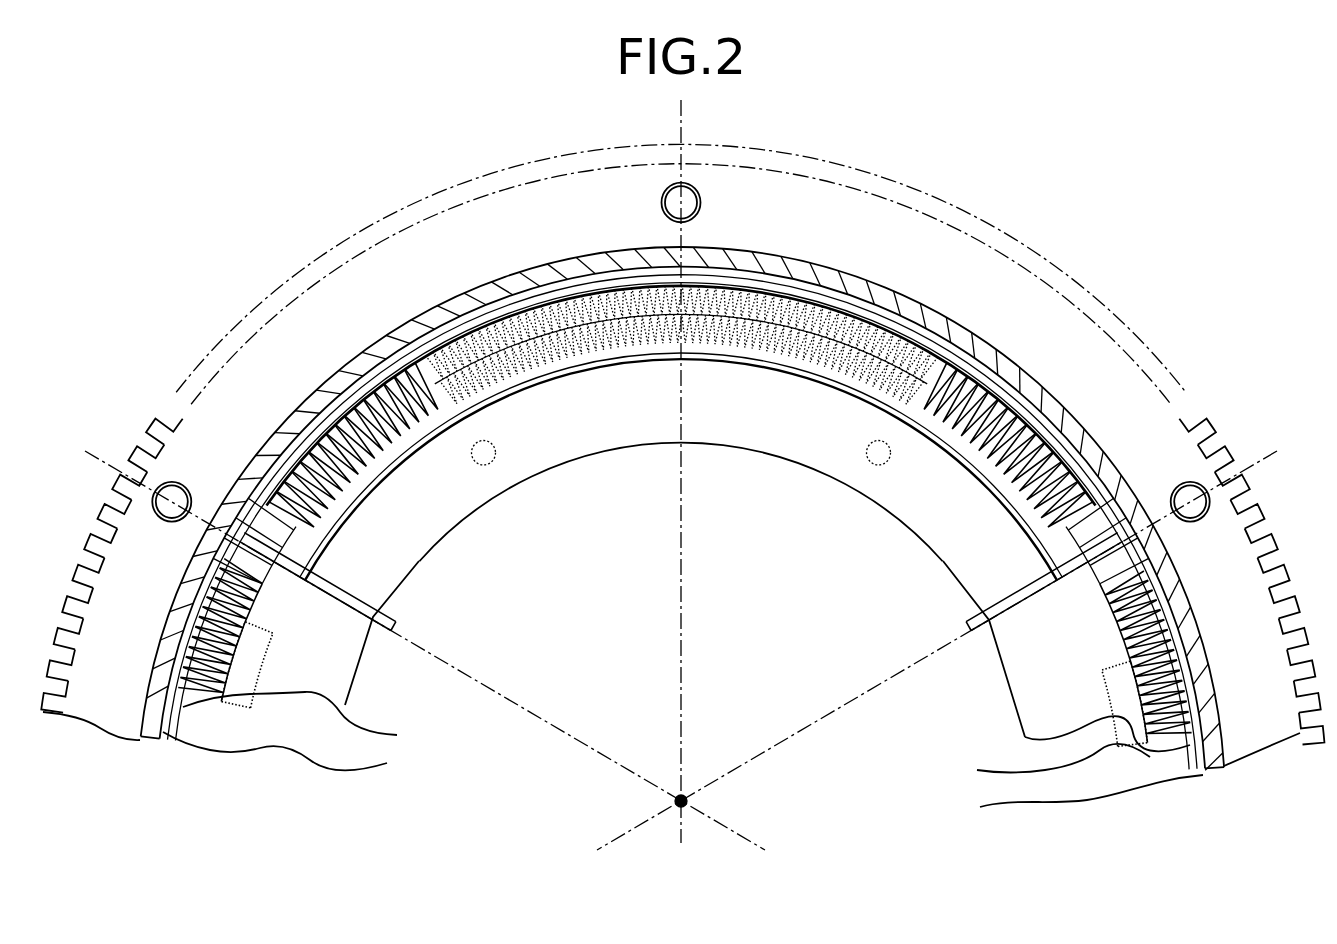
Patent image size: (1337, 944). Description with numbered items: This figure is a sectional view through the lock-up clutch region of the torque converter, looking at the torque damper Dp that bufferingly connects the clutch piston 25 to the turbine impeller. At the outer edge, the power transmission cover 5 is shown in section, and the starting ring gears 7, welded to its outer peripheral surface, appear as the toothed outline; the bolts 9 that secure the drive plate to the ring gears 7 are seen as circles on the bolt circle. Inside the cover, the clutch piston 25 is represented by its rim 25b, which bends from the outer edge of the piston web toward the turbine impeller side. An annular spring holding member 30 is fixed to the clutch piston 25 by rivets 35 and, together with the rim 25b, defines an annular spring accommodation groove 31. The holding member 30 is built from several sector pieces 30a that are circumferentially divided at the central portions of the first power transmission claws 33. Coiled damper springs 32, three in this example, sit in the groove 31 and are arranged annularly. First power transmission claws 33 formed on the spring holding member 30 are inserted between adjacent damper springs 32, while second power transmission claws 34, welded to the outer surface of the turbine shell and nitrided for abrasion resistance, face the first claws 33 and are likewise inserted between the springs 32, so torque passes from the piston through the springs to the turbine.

The power transmission cover 5 is at (480, 290).
The starting ring gear 7 is at (1268, 717).
The bolt 9 is at (663, 206).
The clutch piston 25 is at (1095, 745).
The rim 25b is at (1043, 440).
The annular spring holding member 30 is at (772, 300).
The sector piece 30a is at (760, 442).
The annular spring accommodation groove 31 is at (988, 400).
The coiled damper spring 32 is at (205, 627).
The first power transmission claw 33 is at (232, 556).
The second power transmission claw 34 is at (300, 556).
The rivet 35 is at (490, 465).
The torque damper Dp is at (1150, 611).